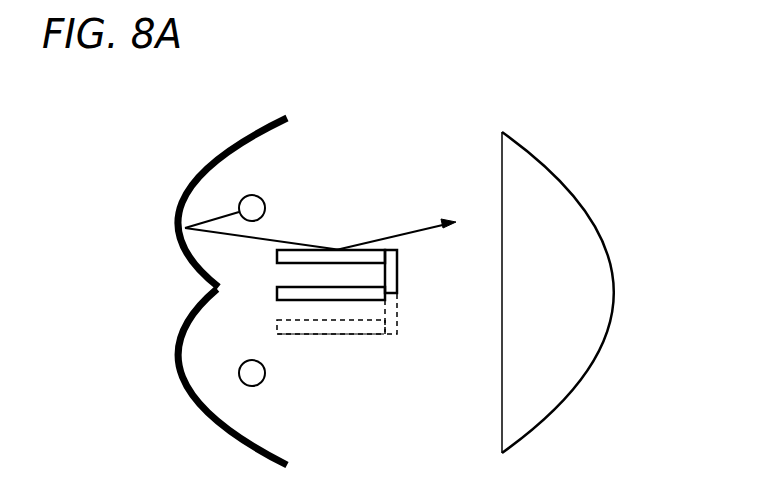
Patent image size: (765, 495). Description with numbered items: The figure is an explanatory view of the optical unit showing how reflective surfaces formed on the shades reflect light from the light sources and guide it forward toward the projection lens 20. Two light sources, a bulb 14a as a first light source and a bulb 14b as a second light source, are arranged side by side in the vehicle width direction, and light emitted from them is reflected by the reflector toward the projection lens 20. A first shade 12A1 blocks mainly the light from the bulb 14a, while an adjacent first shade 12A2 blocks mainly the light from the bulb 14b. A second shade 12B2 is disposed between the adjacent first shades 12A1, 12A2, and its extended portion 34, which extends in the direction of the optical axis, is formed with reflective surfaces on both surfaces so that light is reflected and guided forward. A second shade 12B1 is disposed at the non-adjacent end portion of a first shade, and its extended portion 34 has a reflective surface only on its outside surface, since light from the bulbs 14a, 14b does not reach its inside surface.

The projection lens 20 is at (583, 343).
The bulb 14a is at (254, 371).
The bulb 14b is at (256, 210).
The first shade 12A1 is at (402, 320).
The first shade 12A2 is at (399, 279).
The second shade 12B1 is at (387, 248).
The second shade 12B2 is at (277, 292).
The extended portion 34 is at (321, 290).